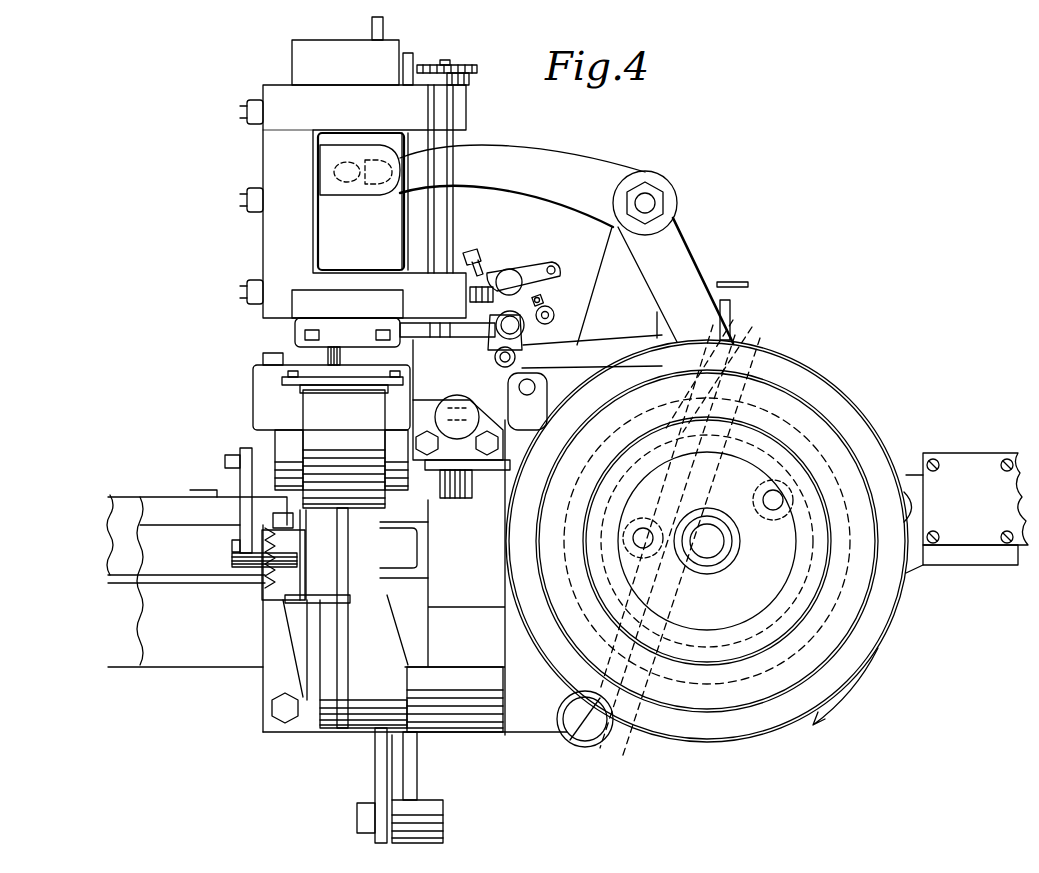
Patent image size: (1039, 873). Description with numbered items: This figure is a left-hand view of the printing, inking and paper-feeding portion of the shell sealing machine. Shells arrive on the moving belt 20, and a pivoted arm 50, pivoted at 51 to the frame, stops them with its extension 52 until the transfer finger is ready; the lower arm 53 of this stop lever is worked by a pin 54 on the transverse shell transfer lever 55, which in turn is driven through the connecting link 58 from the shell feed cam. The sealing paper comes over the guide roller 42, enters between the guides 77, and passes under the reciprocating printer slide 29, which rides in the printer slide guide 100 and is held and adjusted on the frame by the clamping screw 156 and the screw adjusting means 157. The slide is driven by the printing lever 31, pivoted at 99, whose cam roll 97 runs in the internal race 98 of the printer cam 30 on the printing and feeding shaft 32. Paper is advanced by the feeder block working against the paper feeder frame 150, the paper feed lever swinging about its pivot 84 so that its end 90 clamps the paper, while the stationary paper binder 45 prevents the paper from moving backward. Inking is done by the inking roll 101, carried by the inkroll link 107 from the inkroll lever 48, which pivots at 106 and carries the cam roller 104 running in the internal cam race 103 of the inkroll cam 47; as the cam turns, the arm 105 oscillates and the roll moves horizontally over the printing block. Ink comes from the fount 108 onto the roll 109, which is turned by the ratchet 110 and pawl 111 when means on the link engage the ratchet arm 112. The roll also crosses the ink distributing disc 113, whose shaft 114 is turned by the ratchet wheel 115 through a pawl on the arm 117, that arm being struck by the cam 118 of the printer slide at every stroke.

The moving belt 20 is at (115, 548).
The printer slide 29 is at (325, 236).
The printer cam 30 is at (830, 452).
The printing lever 31 is at (690, 257).
The printing and feeding shaft 32 is at (710, 528).
The guide roller 42 is at (360, 427).
The paper binder 45 is at (262, 370).
The inkroll cam 47 is at (770, 360).
The inkroll lever 48 is at (720, 383).
The pivoted arm 50 is at (240, 480).
The pivot 51 is at (232, 542).
The extension 52 is at (240, 452).
The lower arm 53 is at (290, 588).
The pin 54 is at (295, 603).
The transverse shell transfer lever 55 is at (348, 648).
The connecting link 58 is at (417, 772).
The guides 77 is at (305, 389).
The pivot 84 is at (519, 386).
The end of lever 90 is at (322, 350).
The cam roll 97 is at (775, 520).
The internal race 98 is at (707, 541).
The pivot 99 is at (650, 205).
The printer slide guide 100 is at (275, 143).
The inking roll 101 is at (500, 358).
The internal cam race 103 is at (707, 541).
The cam roller 104 is at (647, 586).
The arm 105 is at (650, 680).
The pivot 106 is at (596, 742).
The inkroll link 107 is at (592, 362).
The fount 108 is at (512, 278).
The roll 109 is at (490, 335).
The ratchet 110 is at (524, 332).
The pawl 111 is at (542, 300).
The ratchet arm 112 is at (554, 315).
The ink distributing disc 113 is at (434, 338).
The shaft 114 is at (445, 218).
The ratchet wheel 115 is at (466, 65).
The arm 117 is at (466, 82).
The cam 118 is at (372, 22).
The paper feeder frame 150 is at (283, 381).
The clamping screw 156 is at (456, 498).
The screw adjusting means 157 is at (445, 411).